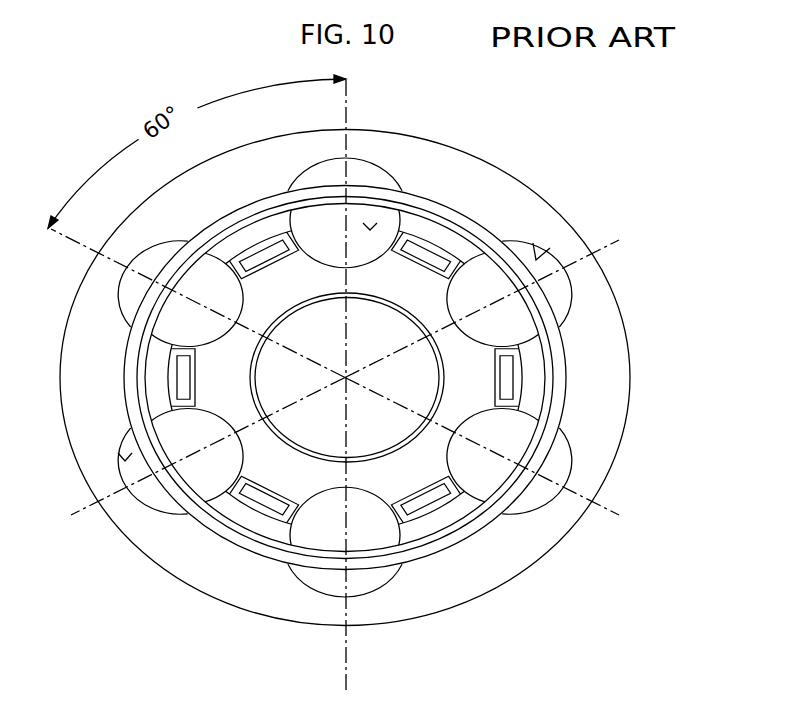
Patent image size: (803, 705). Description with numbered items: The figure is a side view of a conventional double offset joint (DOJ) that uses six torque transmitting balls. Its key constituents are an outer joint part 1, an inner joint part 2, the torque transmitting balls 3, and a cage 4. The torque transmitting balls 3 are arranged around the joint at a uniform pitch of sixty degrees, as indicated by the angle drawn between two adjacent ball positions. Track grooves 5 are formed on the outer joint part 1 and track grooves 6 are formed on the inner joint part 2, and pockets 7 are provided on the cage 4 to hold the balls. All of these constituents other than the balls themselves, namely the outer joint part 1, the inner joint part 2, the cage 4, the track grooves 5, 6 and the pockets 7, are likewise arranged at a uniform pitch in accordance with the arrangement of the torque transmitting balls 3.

The outer joint part 1 is at (490, 175).
The inner joint part 2 is at (383, 288).
The torque transmitting balls 3 is at (368, 170).
The cage 4 is at (540, 378).
The track grooves 5 is at (538, 258).
The track grooves 6 is at (168, 378).
The pockets 7 is at (370, 229).